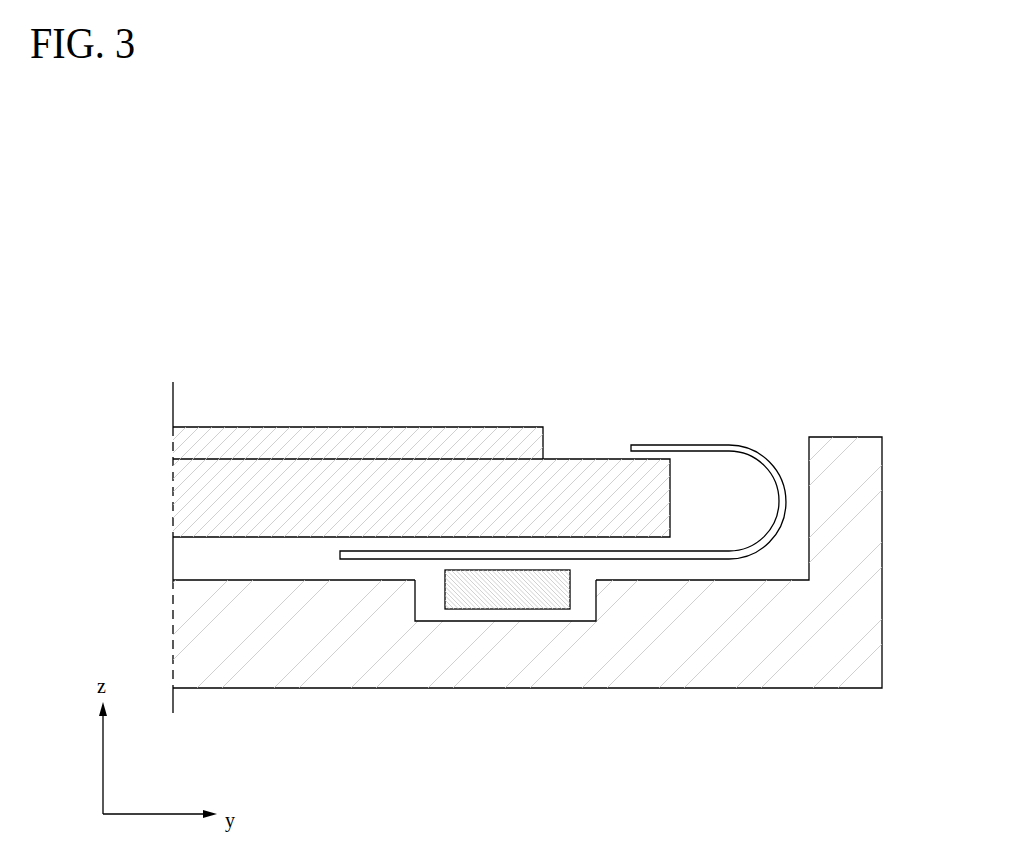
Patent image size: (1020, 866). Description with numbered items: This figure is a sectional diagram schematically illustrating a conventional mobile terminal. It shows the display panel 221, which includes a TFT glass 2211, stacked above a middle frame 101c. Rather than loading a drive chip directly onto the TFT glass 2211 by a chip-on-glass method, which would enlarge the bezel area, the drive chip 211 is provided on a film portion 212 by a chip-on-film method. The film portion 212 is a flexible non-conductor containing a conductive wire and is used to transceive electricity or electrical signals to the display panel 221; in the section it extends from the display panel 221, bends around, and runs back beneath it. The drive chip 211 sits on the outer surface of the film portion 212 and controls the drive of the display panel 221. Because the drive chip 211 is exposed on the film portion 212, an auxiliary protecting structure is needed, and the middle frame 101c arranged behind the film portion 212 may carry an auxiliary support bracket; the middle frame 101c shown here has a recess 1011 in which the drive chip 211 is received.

The middle frame 101c is at (337, 668).
The accommodating groove 1011 is at (450, 632).
The drive chip 211 is at (522, 597).
The film portion 212 is at (680, 448).
The display panel 221 is at (271, 420).
The TFT glass 2211 is at (403, 472).